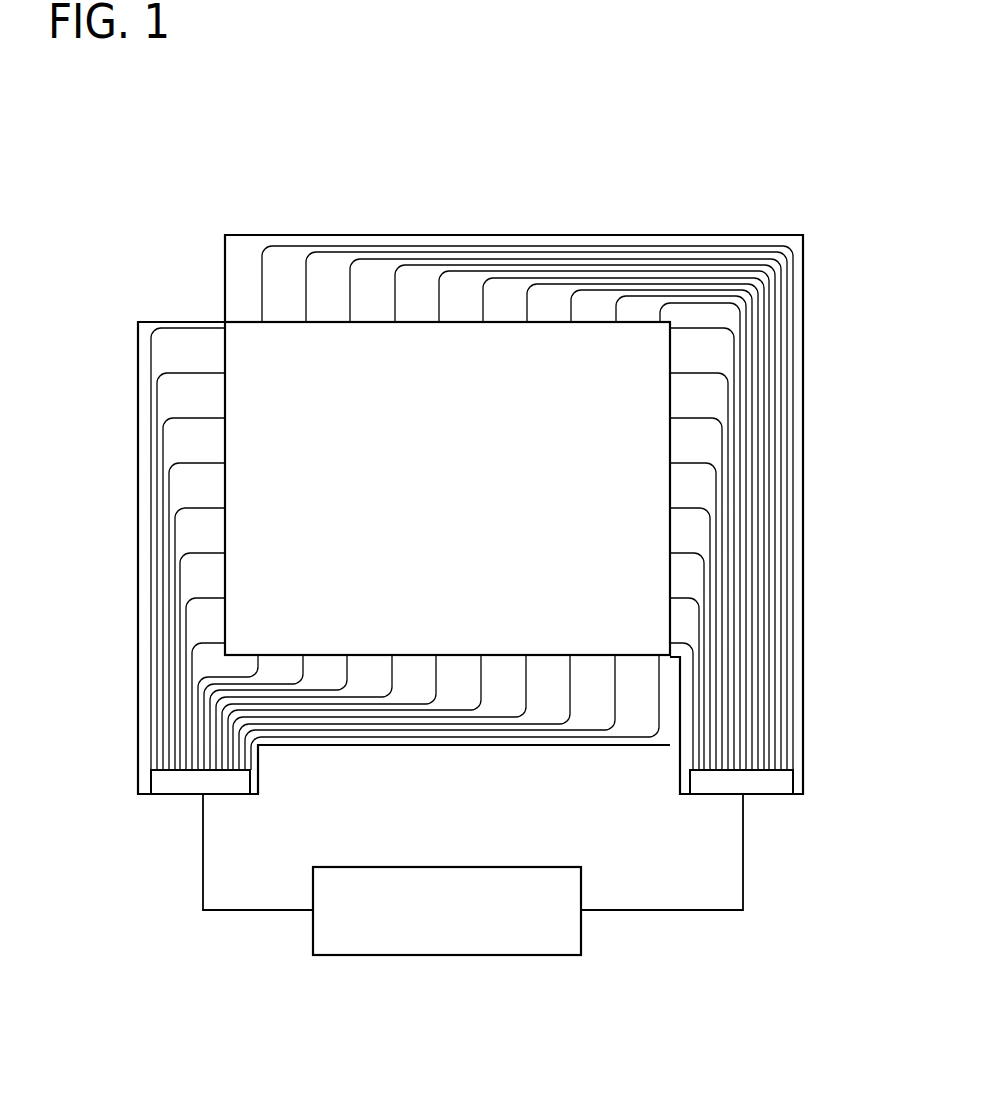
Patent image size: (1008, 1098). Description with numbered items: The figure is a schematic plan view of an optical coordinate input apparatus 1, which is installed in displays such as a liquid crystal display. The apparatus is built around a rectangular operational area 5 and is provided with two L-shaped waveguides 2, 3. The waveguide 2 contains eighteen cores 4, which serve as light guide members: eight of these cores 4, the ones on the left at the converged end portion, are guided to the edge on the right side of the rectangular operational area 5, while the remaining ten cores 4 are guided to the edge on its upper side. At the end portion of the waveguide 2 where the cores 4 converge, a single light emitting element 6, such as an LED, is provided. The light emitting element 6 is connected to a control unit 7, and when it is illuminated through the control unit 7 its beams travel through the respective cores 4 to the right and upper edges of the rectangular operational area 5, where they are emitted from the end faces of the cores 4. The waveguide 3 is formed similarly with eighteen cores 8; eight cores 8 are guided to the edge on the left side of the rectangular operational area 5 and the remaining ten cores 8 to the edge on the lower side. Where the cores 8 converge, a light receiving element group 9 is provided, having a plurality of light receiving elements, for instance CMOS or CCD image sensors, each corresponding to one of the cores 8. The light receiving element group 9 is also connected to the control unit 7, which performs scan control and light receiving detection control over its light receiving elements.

The optical coordinate input apparatus 1 is at (687, 200).
The waveguide 2 is at (797, 330).
The waveguide 3 is at (145, 463).
The cores 4 is at (773, 457).
The rectangular operational area 5 is at (453, 504).
The light emitting element 6 is at (785, 783).
The control unit 7 is at (538, 955).
The cores 8 is at (157, 655).
The light receiving element group 9 is at (167, 778).